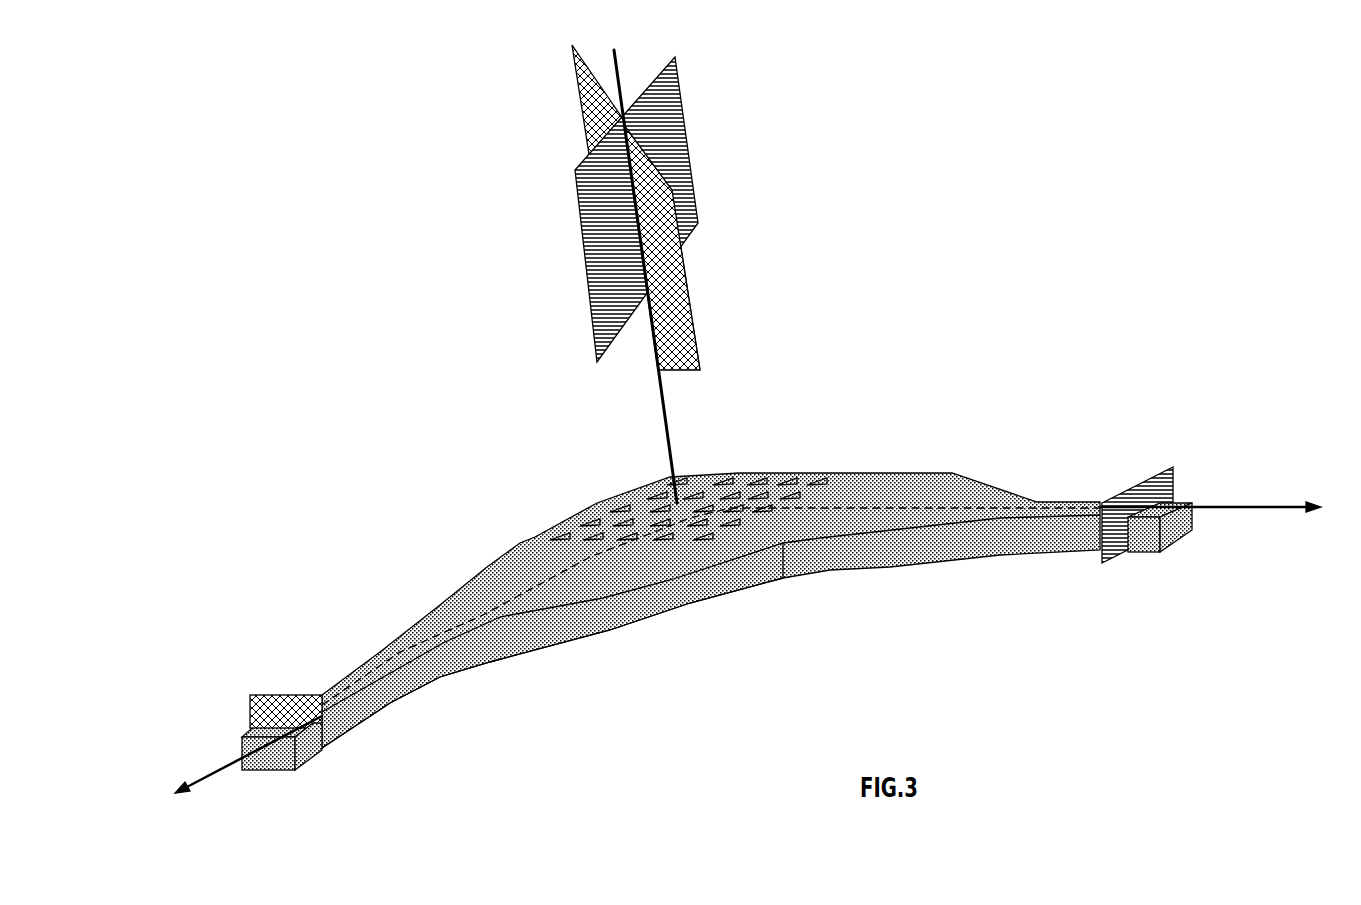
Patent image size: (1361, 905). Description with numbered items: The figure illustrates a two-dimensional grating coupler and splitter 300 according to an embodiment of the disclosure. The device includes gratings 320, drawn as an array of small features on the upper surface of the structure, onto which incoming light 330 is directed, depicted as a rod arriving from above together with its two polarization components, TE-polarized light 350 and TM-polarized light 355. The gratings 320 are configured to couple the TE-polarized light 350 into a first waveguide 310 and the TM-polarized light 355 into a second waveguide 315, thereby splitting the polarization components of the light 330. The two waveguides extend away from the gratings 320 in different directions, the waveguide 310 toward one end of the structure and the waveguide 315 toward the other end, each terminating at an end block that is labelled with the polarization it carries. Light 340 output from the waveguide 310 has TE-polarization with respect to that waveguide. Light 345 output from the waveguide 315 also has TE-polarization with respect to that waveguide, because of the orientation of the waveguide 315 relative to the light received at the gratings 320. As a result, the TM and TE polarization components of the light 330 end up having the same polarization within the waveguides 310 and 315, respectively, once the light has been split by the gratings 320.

The 2D grating coupler and splitter 300 is at (968, 268).
The waveguide 310 is at (1052, 553).
The waveguide 315 is at (400, 698).
The gratings 320 is at (807, 475).
The light 330 is at (670, 423).
The light output from waveguide 310 340 is at (1253, 506).
The light output from waveguide 315 345 is at (220, 766).
The TE-polarized light 350 is at (670, 102).
The TM-polarized light 355 is at (726, 407).